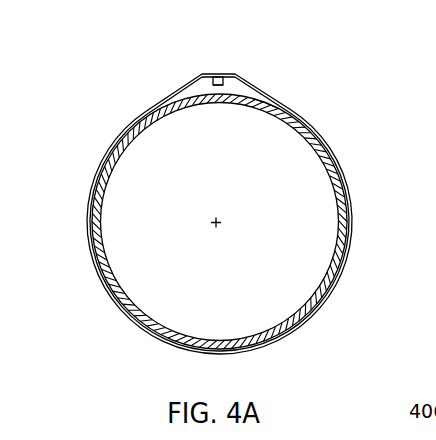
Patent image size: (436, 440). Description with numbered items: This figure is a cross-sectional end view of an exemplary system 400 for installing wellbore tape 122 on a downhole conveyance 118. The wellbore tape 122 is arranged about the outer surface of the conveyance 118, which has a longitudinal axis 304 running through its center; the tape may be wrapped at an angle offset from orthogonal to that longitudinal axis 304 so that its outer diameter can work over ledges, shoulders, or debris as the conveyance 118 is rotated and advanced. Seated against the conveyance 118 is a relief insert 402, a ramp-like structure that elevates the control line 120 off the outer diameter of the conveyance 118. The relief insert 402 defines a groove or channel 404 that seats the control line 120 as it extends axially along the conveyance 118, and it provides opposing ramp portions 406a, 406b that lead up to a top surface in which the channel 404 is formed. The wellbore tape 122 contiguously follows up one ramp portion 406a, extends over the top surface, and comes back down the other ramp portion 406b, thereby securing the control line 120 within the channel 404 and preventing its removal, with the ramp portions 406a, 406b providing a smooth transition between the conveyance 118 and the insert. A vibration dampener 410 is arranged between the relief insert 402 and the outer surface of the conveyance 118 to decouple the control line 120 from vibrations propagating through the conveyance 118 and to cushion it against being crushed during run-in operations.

The system 400 is at (95, 86).
The conveyance 118 is at (319, 138).
The wellbore tape 122 is at (351, 197).
The ramp portion 406a is at (177, 97).
The ramp portion 406b is at (251, 92).
The relief insert 402 is at (210, 73).
The control line 120 is at (222, 76).
The channel 404 is at (220, 86).
The vibration dampener 410 is at (265, 107).
The longitudinal axis 304 is at (220, 222).